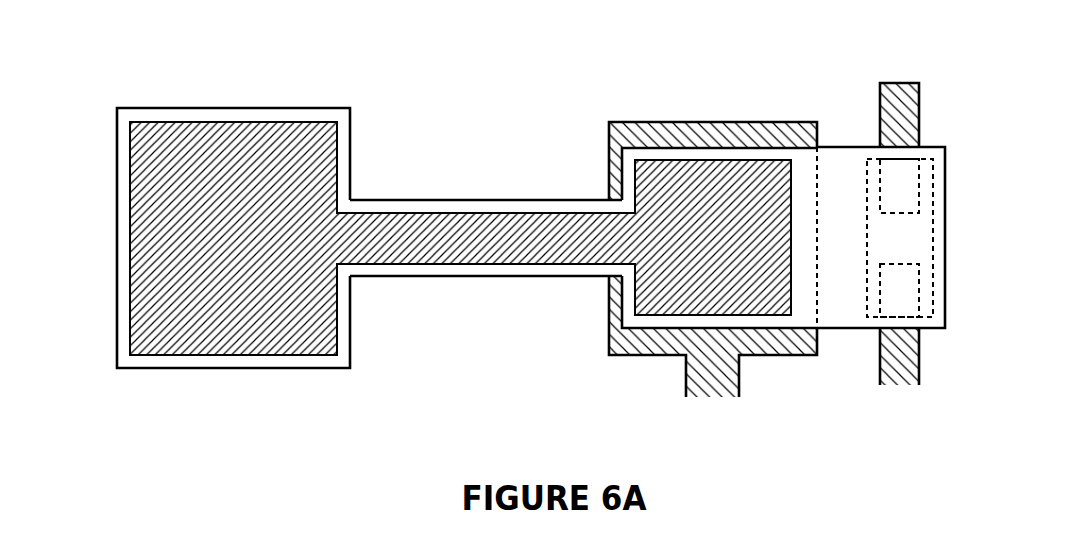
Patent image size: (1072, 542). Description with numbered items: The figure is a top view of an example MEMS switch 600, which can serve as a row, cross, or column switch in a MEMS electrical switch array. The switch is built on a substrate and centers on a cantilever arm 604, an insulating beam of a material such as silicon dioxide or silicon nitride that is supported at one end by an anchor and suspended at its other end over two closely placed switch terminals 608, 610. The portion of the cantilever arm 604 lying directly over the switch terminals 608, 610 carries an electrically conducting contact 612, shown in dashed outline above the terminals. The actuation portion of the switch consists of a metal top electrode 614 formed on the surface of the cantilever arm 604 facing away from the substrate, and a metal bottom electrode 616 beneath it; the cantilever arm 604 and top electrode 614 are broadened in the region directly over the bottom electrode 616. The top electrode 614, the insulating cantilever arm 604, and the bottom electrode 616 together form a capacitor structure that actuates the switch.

The MEMS switch 600 is at (958, 75).
The cantilever arm 604 is at (415, 207).
The top electrode 614 is at (415, 257).
The bottom electrode 616 is at (700, 362).
The switch terminal 610 is at (894, 117).
The switch terminal 608 is at (906, 362).
The contact 612 is at (944, 232).